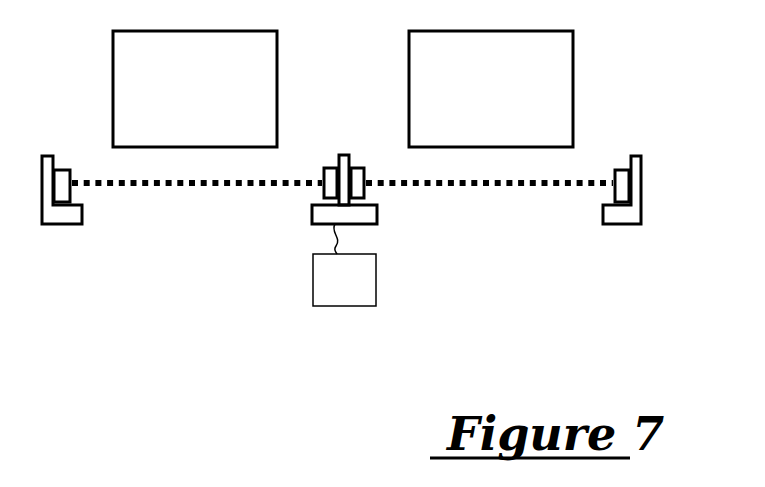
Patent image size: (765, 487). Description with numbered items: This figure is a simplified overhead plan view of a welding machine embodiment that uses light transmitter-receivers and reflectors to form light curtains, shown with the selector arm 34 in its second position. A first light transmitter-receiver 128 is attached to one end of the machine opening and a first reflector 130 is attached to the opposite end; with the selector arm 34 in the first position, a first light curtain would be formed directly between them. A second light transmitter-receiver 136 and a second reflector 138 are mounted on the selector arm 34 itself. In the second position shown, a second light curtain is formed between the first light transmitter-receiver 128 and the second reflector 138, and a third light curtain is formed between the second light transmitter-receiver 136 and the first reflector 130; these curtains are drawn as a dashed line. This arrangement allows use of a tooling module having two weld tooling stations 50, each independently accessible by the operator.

The weld tooling station 50 is at (178, 97).
The selector arm 34 is at (344, 265).
The first light transmitter-receiver 128 is at (613, 190).
The first reflector 130 is at (70, 190).
The second light transmitter-receiver 136 is at (322, 188).
The second reflector 138 is at (366, 188).